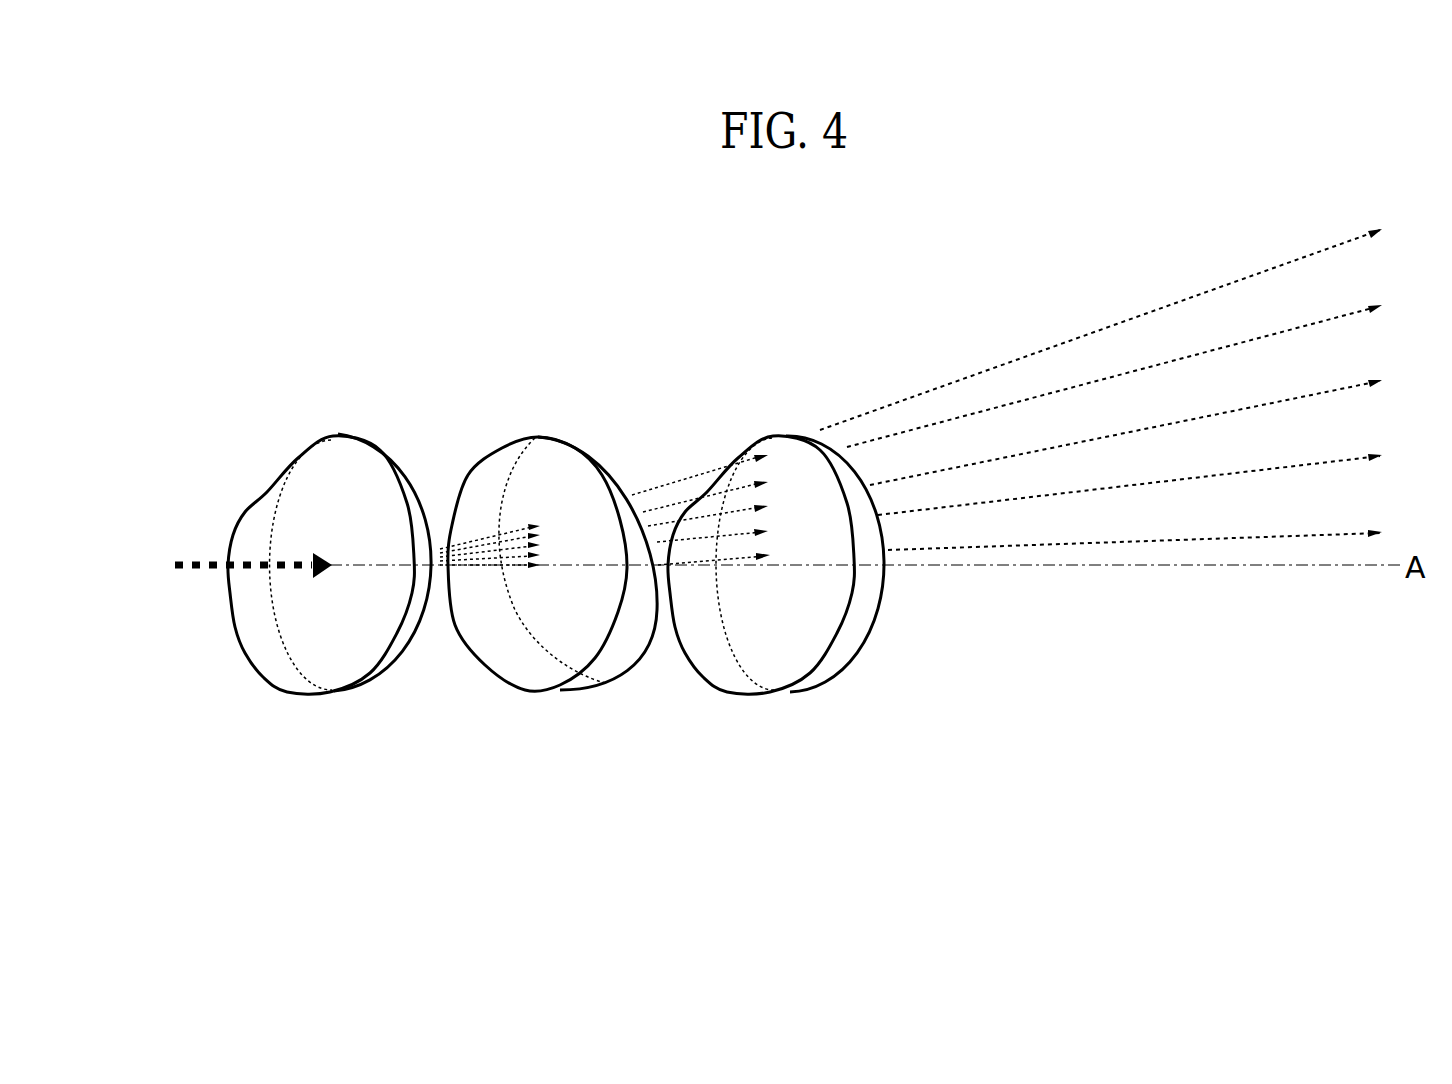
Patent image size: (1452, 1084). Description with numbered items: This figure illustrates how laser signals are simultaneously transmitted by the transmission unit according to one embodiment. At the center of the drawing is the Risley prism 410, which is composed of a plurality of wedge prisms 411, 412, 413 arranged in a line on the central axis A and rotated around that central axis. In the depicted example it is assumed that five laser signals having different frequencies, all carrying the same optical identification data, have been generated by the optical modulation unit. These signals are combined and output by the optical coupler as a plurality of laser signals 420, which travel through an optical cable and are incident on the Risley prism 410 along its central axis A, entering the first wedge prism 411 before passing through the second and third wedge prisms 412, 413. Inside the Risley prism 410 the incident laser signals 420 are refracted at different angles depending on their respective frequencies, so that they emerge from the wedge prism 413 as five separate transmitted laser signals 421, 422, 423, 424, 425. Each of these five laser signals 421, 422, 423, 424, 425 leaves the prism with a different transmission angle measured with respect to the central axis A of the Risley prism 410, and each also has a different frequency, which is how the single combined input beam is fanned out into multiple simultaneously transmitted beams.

The Risley prism 410 is at (556, 559).
The wedge prism 411 is at (334, 437).
The wedge prism 412 is at (539, 437).
The wedge prism 413 is at (776, 435).
The laser signals 420 is at (213, 578).
The transmitted laser signal 421 is at (1300, 538).
The transmitted laser signal 422 is at (1300, 468).
The transmitted laser signal 423 is at (1300, 395).
The transmitted laser signal 424 is at (1300, 322).
The transmitted laser signal 425 is at (1237, 281).